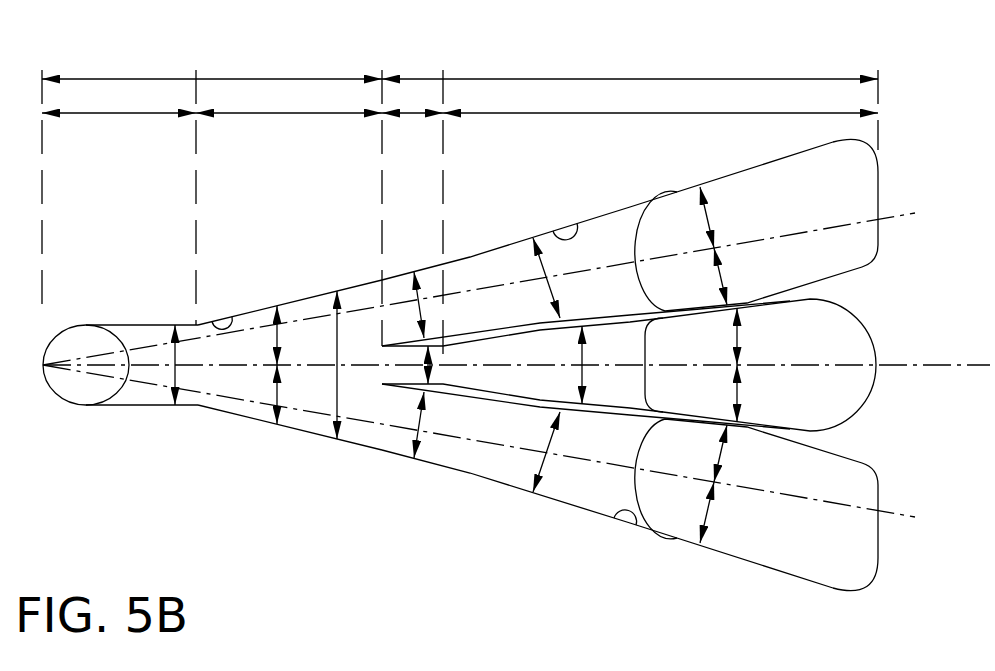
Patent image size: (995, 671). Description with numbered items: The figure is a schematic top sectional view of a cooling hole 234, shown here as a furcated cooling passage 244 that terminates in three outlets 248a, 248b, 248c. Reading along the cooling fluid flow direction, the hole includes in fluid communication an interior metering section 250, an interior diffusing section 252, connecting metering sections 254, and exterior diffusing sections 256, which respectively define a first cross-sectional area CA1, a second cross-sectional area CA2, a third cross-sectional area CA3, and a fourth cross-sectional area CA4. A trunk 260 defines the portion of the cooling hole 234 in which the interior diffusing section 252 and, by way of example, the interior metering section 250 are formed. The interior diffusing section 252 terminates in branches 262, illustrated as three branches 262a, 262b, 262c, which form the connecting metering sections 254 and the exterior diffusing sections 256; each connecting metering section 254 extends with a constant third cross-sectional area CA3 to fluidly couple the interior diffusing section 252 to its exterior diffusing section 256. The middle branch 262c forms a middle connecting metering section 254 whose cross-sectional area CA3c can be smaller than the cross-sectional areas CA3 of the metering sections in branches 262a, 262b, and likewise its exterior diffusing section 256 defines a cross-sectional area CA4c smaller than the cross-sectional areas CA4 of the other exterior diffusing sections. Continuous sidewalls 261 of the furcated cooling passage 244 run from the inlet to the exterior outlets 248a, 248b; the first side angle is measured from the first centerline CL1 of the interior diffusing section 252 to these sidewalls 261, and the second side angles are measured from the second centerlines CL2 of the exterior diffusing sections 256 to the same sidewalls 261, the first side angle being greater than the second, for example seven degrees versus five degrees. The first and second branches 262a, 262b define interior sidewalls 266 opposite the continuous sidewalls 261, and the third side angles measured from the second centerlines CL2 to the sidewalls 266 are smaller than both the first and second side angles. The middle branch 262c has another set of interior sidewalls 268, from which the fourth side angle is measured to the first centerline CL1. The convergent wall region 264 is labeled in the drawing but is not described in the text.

The trunk 260 is at (200, 79).
The branches 262 is at (587, 79).
The interior metering section 250 is at (103, 113).
The interior diffusing section 252 is at (267, 113).
The connecting metering section 254 is at (412, 113).
The exterior diffusing section 256 is at (637, 113).
The cooling hole 234 is at (553, 220).
The continuous sidewalls 261 is at (230, 315).
The first branch 262a is at (470, 255).
The second branch 262b is at (507, 487).
The third branch 262c is at (453, 388).
The outlet 248a is at (815, 165).
The outlet 248b is at (763, 540).
The outlet 248c is at (820, 327).
The interior sidewalls 266 is at (528, 325).
The interior sidewalls 268 is at (488, 340).
The convergent wall 264 is at (343, 445).
The furcated cooling passage 244 is at (215, 380).
The first centerline CL1 is at (787, 363).
The second centerlines CL2 is at (775, 237).
The first cross-sectional area CA1 is at (166, 375).
The second cross-sectional area CA2 is at (332, 410).
The third cross-sectional area CA3 is at (416, 282).
The cross-sectional area CA3c is at (426, 356).
The fourth cross-sectional area CA4 is at (547, 283).
The cross-sectional area CA4c is at (588, 356).